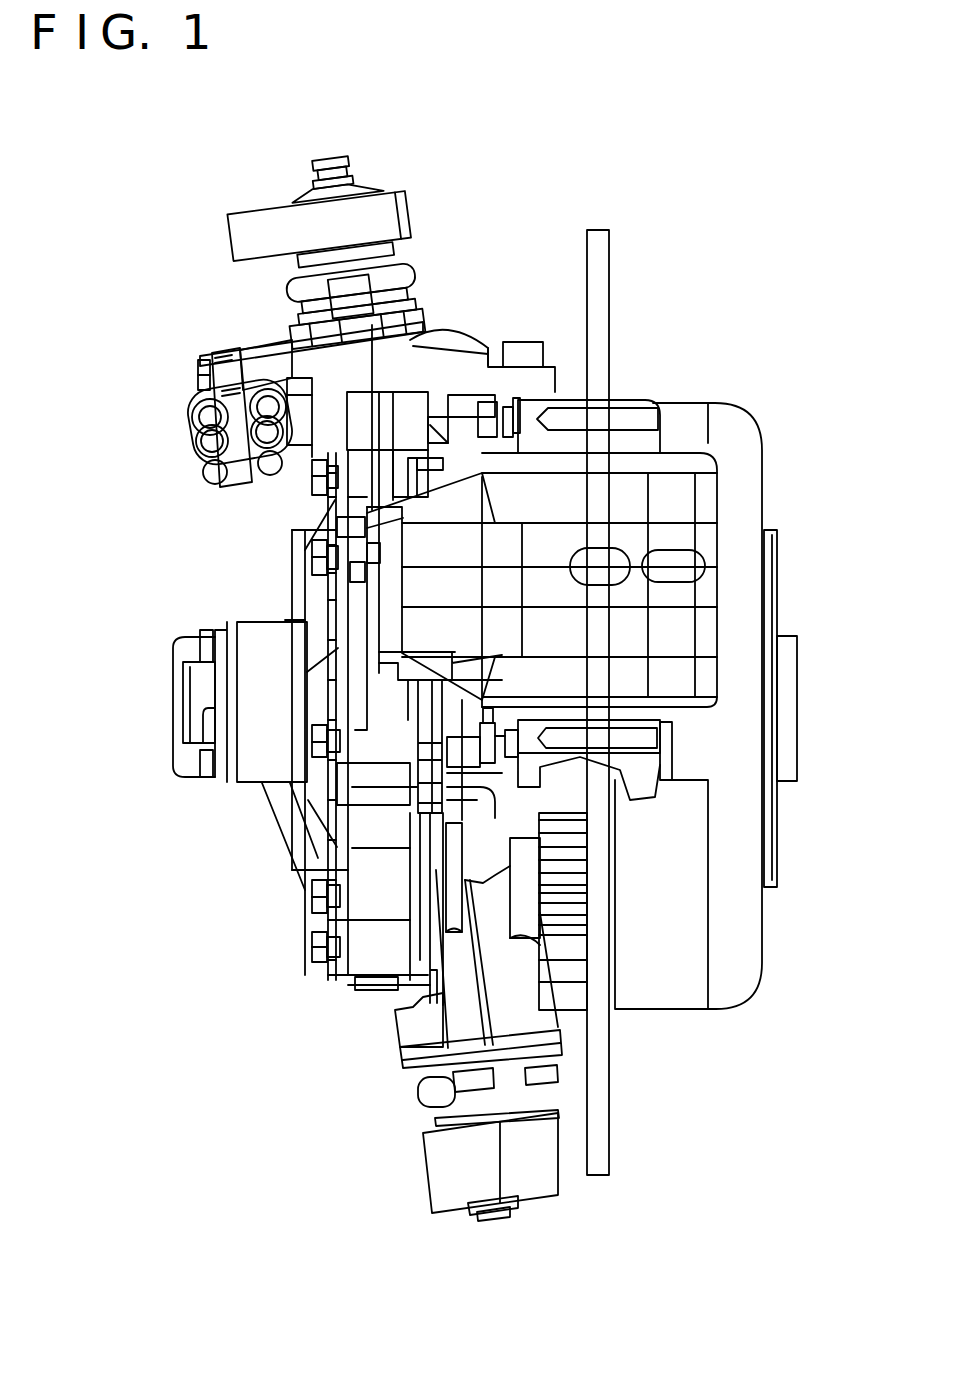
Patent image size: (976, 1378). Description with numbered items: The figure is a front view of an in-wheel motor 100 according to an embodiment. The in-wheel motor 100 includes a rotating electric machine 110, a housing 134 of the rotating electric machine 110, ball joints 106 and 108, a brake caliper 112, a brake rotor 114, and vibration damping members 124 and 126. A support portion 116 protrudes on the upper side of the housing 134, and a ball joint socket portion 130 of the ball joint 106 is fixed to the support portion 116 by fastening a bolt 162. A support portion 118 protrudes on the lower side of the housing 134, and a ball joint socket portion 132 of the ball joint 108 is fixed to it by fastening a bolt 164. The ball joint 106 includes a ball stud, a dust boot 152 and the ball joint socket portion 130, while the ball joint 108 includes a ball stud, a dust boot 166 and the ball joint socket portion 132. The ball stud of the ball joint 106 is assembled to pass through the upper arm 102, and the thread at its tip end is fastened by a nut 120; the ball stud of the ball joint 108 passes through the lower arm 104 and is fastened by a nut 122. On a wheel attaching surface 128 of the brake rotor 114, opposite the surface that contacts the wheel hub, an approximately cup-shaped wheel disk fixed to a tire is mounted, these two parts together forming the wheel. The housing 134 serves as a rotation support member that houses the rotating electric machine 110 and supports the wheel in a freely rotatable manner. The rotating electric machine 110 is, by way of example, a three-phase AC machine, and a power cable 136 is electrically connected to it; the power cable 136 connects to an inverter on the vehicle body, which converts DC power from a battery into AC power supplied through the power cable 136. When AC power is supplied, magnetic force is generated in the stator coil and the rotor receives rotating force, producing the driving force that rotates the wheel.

The in-wheel motor 100 is at (716, 227).
The upper arm 102 is at (258, 218).
The lower arm 104 is at (542, 1197).
The ball joint 106 is at (417, 277).
The ball joint 108 is at (417, 1108).
The rotating electric machine 110 is at (318, 968).
The brake caliper 112 is at (633, 405).
The brake rotor 114 is at (605, 1115).
The support portion 116 is at (486, 318).
The support portion 118 is at (393, 1010).
The nut 120 is at (333, 158).
The nut 122 is at (498, 1215).
The vibration damping member 124 is at (425, 335).
The vibration damping member 126 is at (403, 1055).
The wheel attaching surface 128 is at (780, 578).
The ball joint socket portion 130 is at (293, 328).
The ball joint socket portion 132 is at (555, 1050).
The housing 134 is at (328, 922).
The power cable 136 is at (180, 450).
The dust boot 152 is at (292, 287).
The bolt 162 is at (345, 298).
The bolt 164 is at (545, 1080).
The dust boot 166 is at (505, 1088).